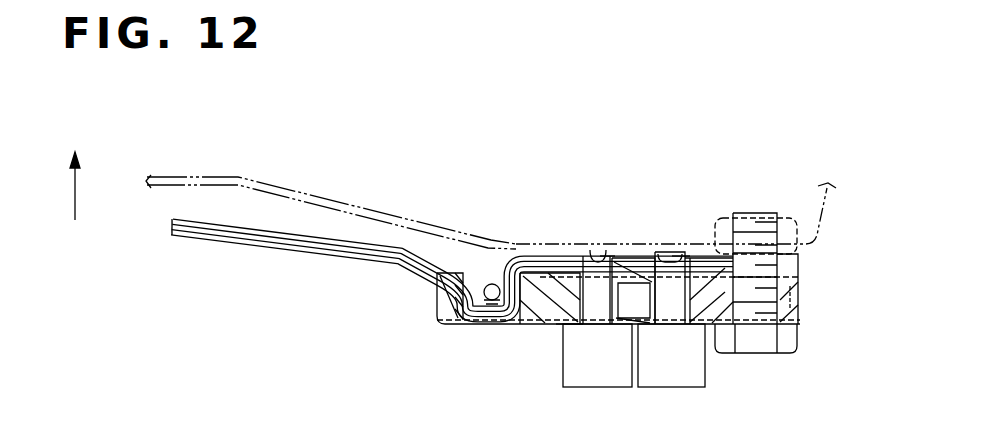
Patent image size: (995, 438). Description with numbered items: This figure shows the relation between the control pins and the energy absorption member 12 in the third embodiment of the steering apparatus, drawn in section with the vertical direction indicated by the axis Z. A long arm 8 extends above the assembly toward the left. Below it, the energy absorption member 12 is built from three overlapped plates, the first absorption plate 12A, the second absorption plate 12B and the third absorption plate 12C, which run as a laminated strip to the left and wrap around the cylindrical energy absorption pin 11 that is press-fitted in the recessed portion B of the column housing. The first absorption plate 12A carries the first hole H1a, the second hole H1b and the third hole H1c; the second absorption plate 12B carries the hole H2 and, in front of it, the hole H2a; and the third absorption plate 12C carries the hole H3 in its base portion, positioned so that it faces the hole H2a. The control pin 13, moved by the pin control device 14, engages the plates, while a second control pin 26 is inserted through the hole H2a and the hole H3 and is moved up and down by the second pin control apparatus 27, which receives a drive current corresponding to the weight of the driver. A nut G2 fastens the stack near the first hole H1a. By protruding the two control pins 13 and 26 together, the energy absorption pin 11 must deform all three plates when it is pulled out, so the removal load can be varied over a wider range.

The arm 8 is at (316, 197).
The energy absorption member 12 is at (402, 260).
The first absorption plate 12A is at (425, 260).
The second absorption plate 12B is at (425, 260).
The third absorption plate 12C is at (176, 221).
The energy absorption pin 11 is at (488, 324).
The recessed portion B is at (460, 326).
The control pin 26 is at (593, 326).
The second pin control apparatus 27 is at (594, 374).
The control pin 13 is at (667, 326).
The pin control device 14 is at (671, 374).
The nut G2 is at (767, 356).
The first hole H1a is at (738, 254).
The second hole H1b is at (680, 254).
The third hole H1c is at (605, 254).
The hole H2 is at (661, 252).
The hole H2a is at (598, 250).
The hole H3 is at (592, 270).
The Z axis Z is at (74, 173).